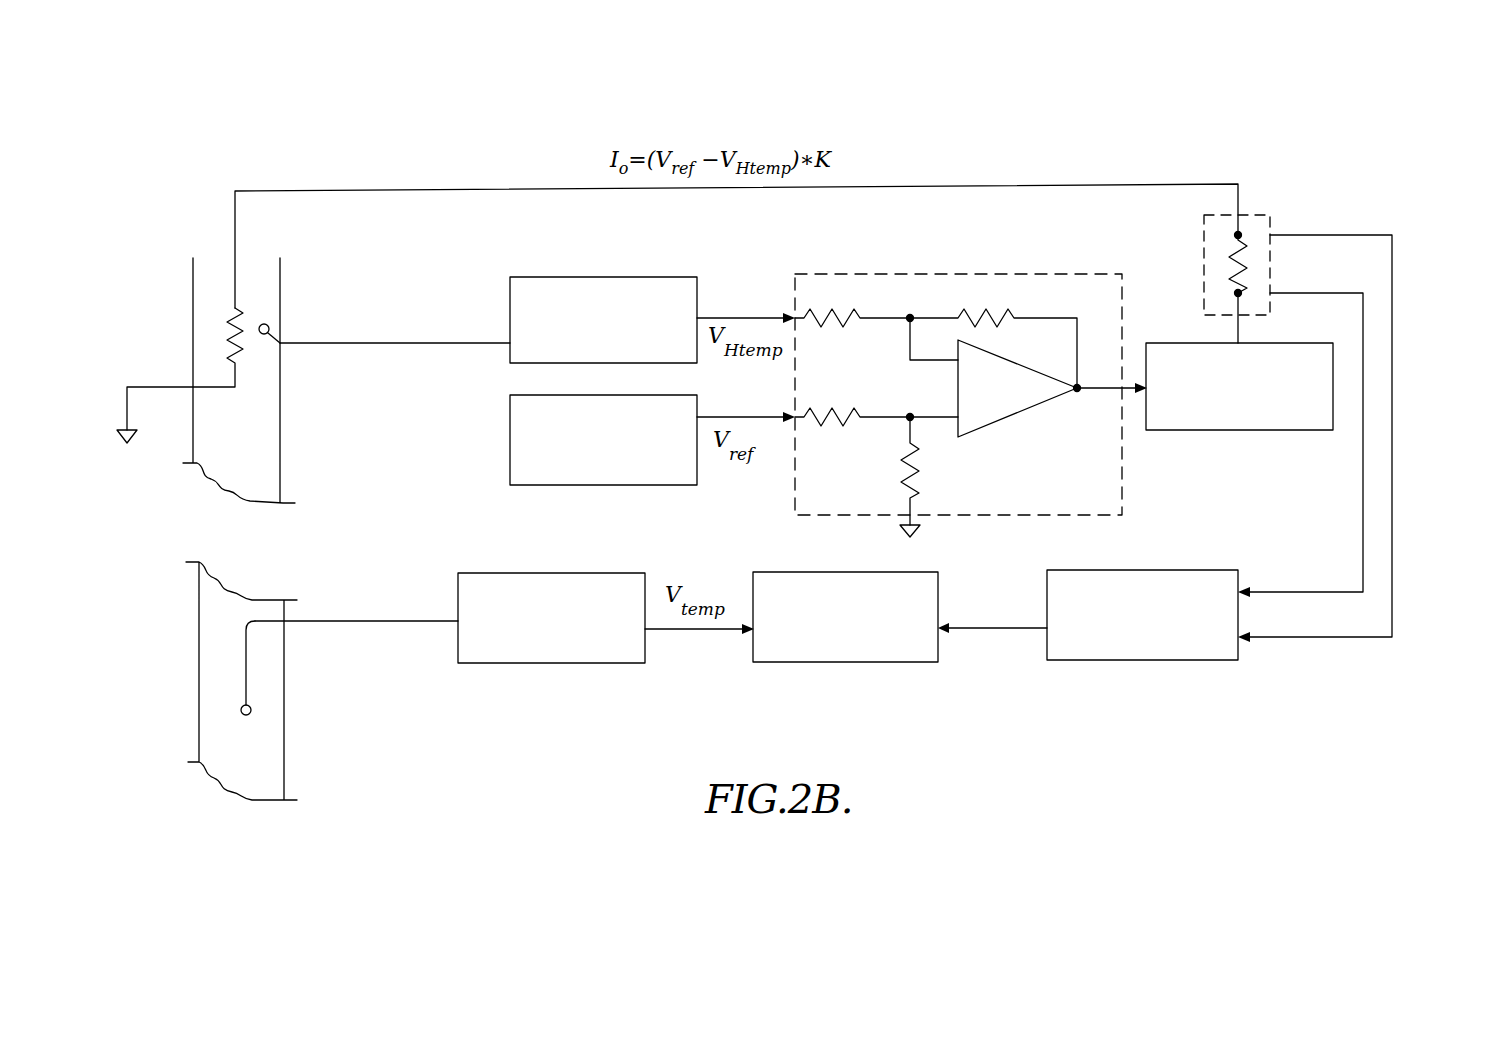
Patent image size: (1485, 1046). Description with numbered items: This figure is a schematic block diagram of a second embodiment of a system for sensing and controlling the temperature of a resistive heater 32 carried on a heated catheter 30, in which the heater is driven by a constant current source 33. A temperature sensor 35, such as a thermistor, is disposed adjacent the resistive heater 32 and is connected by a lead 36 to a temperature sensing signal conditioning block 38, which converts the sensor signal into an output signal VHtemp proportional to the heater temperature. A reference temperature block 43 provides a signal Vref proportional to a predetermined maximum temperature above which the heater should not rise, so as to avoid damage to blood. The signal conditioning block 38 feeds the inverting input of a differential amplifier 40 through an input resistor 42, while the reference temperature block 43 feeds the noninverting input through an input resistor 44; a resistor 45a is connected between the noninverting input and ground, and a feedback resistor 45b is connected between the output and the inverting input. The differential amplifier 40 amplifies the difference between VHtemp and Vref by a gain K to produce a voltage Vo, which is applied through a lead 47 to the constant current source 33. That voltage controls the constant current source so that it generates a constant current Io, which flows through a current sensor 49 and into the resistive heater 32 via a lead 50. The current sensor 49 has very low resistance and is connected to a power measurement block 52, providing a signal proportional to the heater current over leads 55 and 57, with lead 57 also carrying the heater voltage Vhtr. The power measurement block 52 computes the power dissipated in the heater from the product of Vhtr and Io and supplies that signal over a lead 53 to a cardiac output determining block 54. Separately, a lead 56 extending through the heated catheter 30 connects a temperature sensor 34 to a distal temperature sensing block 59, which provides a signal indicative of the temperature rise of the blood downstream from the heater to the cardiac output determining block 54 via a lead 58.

The heated catheter 30 is at (199, 626).
The resistive heater 32 is at (228, 330).
The constant current source 33 is at (1237, 432).
The temperature sensor 34 is at (253, 712).
The temperature sensor 35 is at (269, 327).
The lead 36 is at (370, 343).
The temperature sensing signal conditioning block 38 is at (508, 284).
The differential amplifier 40 is at (1015, 416).
The input resistor 42 is at (803, 316).
The reference temperature block 43 is at (508, 403).
The input resistor 44 is at (803, 415).
The resistor 45a is at (906, 452).
The feedback resistor 45b is at (988, 305).
The lead 47 is at (1110, 390).
The current sensor 49 is at (1204, 250).
The lead 50 is at (368, 191).
The power measurement block 52 is at (1047, 578).
The lead 53 is at (980, 630).
The cardiac output determining block 54 is at (753, 578).
The lead 55 is at (1362, 486).
The lead 56 is at (375, 621).
The lead 57 is at (1395, 555).
The lead 58 is at (685, 630).
The distal temperature sensing block 59 is at (458, 580).